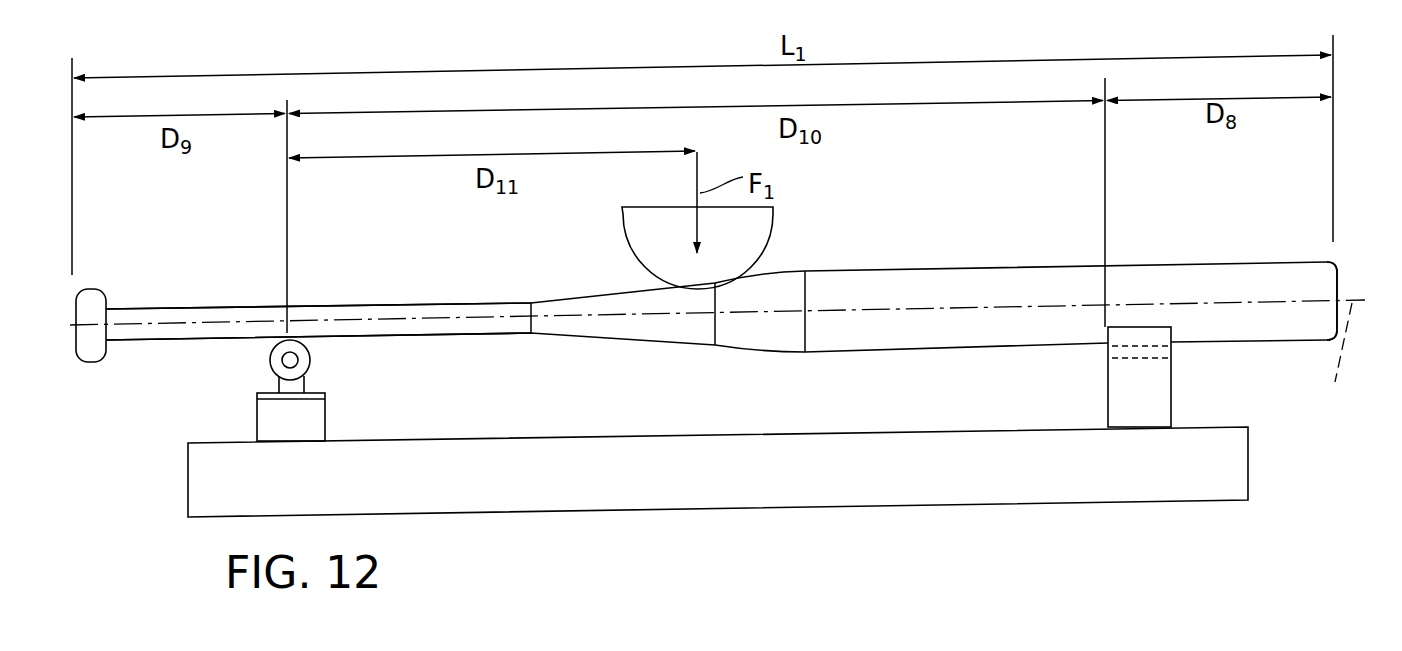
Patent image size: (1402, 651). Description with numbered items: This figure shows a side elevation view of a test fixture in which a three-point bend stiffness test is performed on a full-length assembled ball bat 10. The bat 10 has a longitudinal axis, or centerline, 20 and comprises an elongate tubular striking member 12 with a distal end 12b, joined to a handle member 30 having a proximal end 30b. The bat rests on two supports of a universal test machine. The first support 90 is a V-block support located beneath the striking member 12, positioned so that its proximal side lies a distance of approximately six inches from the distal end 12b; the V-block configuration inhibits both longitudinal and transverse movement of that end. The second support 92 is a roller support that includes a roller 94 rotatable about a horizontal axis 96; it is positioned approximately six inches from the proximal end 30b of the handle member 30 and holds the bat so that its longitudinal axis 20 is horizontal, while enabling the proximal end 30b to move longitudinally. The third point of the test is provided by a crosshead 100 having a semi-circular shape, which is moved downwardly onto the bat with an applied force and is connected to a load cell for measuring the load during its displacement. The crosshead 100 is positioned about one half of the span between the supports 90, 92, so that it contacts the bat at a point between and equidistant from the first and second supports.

The ball bat 10 is at (921, 247).
The striking member 12 is at (1034, 266).
The distal end 12b is at (1336, 261).
The longitudinal axis 20 is at (717, 360).
The handle member 30 is at (557, 335).
The proximal end 30b is at (107, 290).
The first support 90 is at (1163, 395).
The second support 92 is at (317, 415).
The roller 94 is at (269, 361).
The horizontal axis 96 is at (302, 361).
The crosshead 100 is at (772, 237).